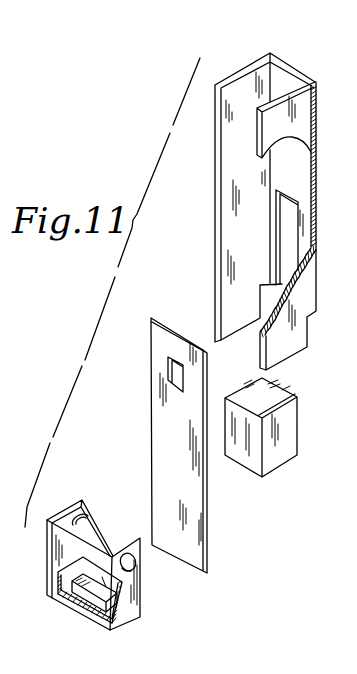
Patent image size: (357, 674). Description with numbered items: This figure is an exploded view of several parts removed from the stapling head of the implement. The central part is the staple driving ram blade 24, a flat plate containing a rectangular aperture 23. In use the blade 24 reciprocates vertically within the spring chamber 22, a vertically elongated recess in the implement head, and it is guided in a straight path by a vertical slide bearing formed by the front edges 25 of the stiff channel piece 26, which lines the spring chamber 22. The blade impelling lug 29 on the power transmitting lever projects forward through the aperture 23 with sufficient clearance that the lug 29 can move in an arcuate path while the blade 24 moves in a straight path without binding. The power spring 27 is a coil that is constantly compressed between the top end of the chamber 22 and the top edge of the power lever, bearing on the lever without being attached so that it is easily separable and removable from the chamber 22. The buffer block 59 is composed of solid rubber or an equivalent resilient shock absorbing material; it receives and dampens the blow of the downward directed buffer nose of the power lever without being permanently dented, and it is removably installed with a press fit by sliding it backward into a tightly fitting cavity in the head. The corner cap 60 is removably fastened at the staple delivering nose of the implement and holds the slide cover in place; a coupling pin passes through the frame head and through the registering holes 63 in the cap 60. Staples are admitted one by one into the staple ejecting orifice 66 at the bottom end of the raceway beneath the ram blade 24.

The spring chamber 22 is at (356, 41).
The rectangular aperture 23 is at (169, 368).
The staple driving ram blade 24 is at (163, 424).
The front edges of channel piece 25 is at (216, 166).
The stiff channel piece 26 is at (254, 52).
The power spring 27 is at (356, 90).
The blade impelling lug 29 is at (304, 290).
The buffer block 59 is at (285, 427).
The corner cap 60 is at (140, 597).
The registering holes 63 is at (81, 525).
The staple ejecting orifice 66 is at (86, 600).